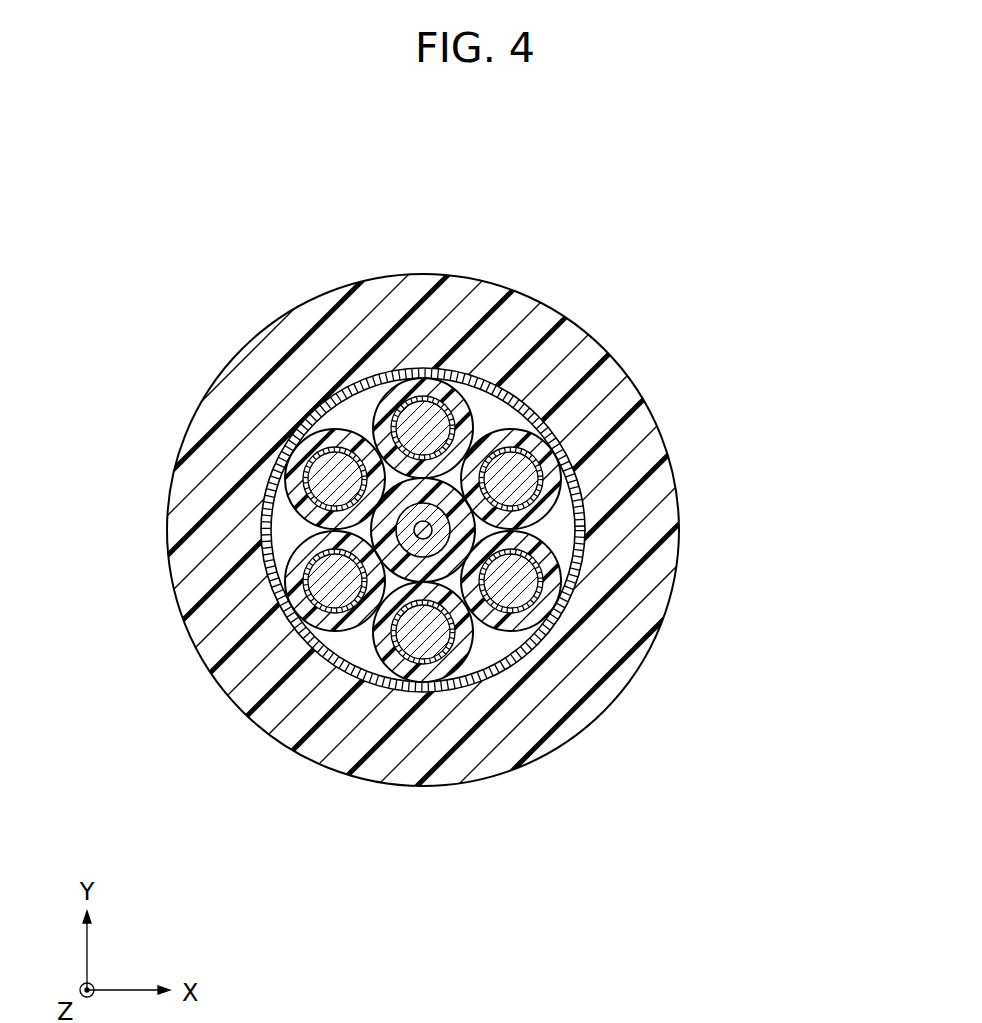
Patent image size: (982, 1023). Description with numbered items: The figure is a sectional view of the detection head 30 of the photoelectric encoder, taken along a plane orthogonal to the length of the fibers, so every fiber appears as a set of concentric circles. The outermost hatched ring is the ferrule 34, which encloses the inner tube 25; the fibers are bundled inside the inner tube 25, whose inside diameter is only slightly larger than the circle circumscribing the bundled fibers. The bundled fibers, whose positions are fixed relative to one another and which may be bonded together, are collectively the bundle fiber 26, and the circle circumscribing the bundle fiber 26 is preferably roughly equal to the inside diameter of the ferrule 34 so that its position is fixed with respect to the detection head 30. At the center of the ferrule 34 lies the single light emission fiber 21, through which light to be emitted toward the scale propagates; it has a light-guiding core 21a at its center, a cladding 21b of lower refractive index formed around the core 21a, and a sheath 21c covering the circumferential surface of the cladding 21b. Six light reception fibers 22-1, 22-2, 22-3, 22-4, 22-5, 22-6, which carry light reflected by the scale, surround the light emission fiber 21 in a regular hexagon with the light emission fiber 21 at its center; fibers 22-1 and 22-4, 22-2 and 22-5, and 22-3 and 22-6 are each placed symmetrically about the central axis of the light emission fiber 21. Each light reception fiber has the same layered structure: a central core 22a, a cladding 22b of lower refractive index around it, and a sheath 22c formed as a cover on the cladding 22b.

The detection head 30 is at (750, 255).
The ferrule 34 is at (288, 340).
The inner tube 25 is at (303, 420).
The bundle fiber 26 is at (398, 668).
The light reception fiber 22-1 is at (489, 327).
The light reception fiber 22-2 is at (550, 452).
The light reception fiber 22-3 is at (537, 632).
The light reception fiber 22-4 is at (425, 640).
The light reception fiber 22-5 is at (296, 610).
The light reception fiber 22-6 is at (320, 488).
The core 22a is at (412, 331).
The cladding 22b is at (432, 397).
The sheath 22c is at (468, 405).
The light emission fiber 21 is at (599, 562).
The core 21a is at (428, 528).
The cladding 21b is at (445, 535).
The sheath 21c is at (462, 555).